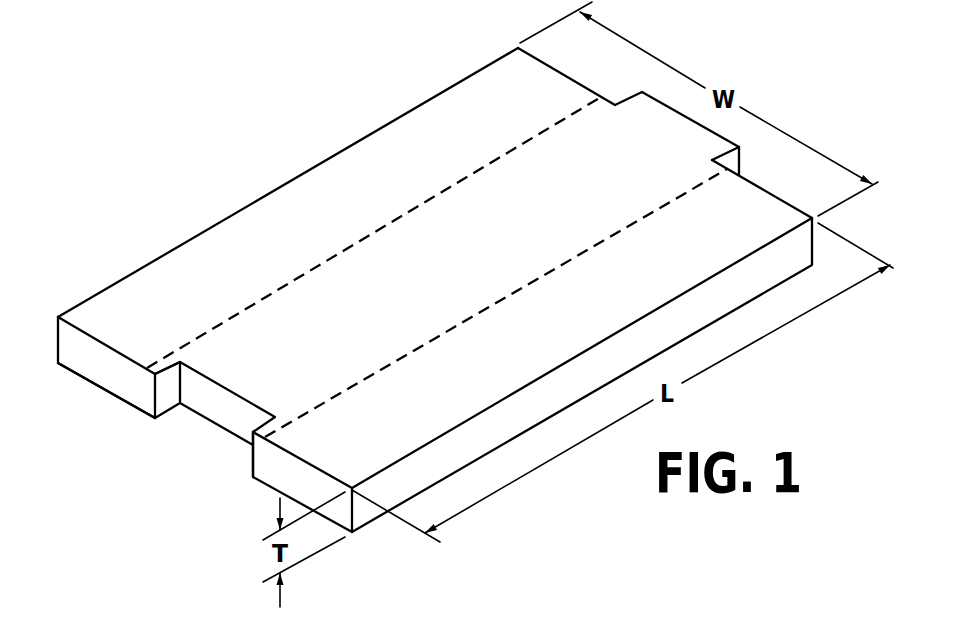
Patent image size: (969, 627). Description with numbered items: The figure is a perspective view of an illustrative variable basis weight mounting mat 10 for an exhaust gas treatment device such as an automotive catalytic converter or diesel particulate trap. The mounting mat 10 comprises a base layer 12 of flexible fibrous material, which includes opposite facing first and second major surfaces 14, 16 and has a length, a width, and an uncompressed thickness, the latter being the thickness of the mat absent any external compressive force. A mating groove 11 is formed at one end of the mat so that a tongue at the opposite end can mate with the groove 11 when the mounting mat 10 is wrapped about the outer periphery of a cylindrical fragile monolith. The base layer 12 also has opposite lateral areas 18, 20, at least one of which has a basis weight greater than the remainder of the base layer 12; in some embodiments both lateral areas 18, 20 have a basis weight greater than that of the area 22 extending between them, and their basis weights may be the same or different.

The mounting mat 10 is at (288, 126).
The groove 11 is at (230, 413).
The base layer 12 is at (460, 88).
The first major surface 14 is at (137, 277).
The second major surface 16 is at (105, 390).
The lateral area 18 is at (364, 212).
The lateral area 20 is at (574, 325).
The area 22 is at (468, 262).